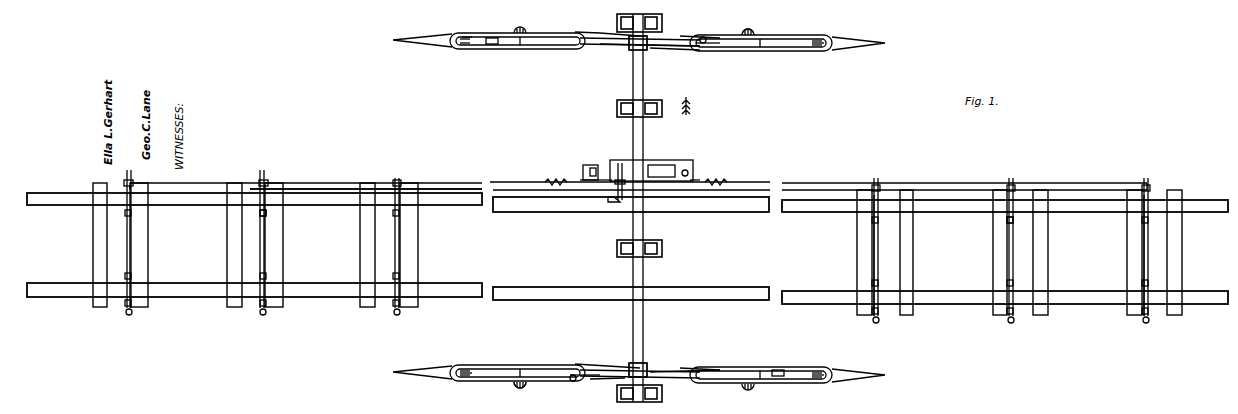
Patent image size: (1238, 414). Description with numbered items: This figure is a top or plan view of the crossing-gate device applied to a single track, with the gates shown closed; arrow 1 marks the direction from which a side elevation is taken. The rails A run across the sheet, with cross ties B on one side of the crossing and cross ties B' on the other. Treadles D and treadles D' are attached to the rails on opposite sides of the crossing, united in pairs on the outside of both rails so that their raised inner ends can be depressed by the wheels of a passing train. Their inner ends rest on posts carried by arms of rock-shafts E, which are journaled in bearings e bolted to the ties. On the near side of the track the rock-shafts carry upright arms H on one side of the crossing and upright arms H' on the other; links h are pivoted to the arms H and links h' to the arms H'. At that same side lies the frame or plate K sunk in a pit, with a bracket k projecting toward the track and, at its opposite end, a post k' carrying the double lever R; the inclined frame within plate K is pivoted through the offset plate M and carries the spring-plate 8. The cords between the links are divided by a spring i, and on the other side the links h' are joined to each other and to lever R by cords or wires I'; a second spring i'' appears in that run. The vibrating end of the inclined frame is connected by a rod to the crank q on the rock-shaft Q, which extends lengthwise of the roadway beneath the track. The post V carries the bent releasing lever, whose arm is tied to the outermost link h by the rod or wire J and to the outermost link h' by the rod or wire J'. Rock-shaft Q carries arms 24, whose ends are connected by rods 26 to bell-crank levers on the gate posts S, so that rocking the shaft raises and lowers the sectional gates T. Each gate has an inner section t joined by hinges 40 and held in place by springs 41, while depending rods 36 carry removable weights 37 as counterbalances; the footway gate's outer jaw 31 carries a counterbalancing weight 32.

The arrow 1 is at (691, 110).
The spring-plate 8 is at (700, 178).
The arms 24 is at (647, 48).
The rods 26 is at (680, 49).
The outer jaw 31 is at (812, 40).
The weight 32 is at (748, 30).
The depending rods 36 is at (462, 36).
The removable weights 37 is at (812, 378).
The hinges 40 is at (710, 40).
The springs 41 is at (703, 37).
The rails A is at (540, 212).
The cross ties B is at (133, 242).
The cross ties B' is at (1019, 255).
The treadles D is at (254, 247).
The treadles D' is at (1005, 259).
The rock-shafts E is at (395, 243).
The upright arms H is at (127, 173).
The upright arms H' is at (1009, 242).
The cords or wires I' is at (964, 178).
The rod or wire J is at (450, 177).
The rod or wire J' is at (698, 191).
The frame or plate K is at (655, 168).
The offset plate M is at (661, 172).
The rock-shaft Q is at (633, 77).
The double lever R is at (590, 181).
The gate posts S is at (492, 38).
The sectional gates T is at (536, 36).
The bracket V is at (610, 202).
The bearings e is at (258, 212).
The links h is at (262, 237).
The links h' is at (880, 242).
The spring i is at (555, 174).
The spring i'' is at (718, 173).
The bracket k is at (693, 167).
The post k' is at (583, 171).
The crank q is at (620, 163).
The inner sections t is at (668, 44).